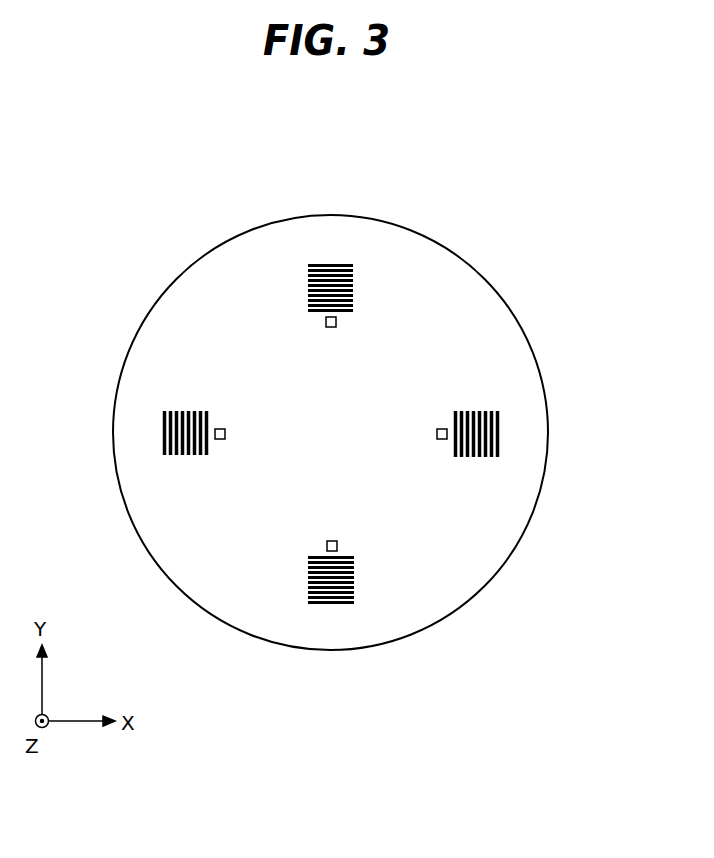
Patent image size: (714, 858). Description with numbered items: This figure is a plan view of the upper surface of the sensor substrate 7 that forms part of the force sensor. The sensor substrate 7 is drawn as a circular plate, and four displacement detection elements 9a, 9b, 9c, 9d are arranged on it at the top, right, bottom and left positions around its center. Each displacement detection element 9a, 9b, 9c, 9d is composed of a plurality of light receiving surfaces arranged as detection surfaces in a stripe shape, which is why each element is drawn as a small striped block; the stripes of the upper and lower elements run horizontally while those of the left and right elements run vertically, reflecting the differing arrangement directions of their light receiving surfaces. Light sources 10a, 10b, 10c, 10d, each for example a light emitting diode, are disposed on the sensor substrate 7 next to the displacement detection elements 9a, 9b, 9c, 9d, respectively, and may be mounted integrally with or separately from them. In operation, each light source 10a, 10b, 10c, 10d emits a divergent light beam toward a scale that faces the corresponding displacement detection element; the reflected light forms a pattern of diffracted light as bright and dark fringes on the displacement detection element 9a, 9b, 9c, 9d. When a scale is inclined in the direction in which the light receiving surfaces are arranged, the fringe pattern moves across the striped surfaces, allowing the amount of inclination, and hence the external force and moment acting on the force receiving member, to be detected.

The sensor substrate 7 is at (490, 549).
The displacement detection element 9a is at (338, 263).
The displacement detection element 9b is at (501, 436).
The displacement detection element 9c is at (325, 603).
The displacement detection element 9d is at (162, 430).
The light source 10a is at (336, 321).
The light source 10b is at (445, 429).
The light source 10c is at (327, 546).
The light source 10d is at (219, 441).